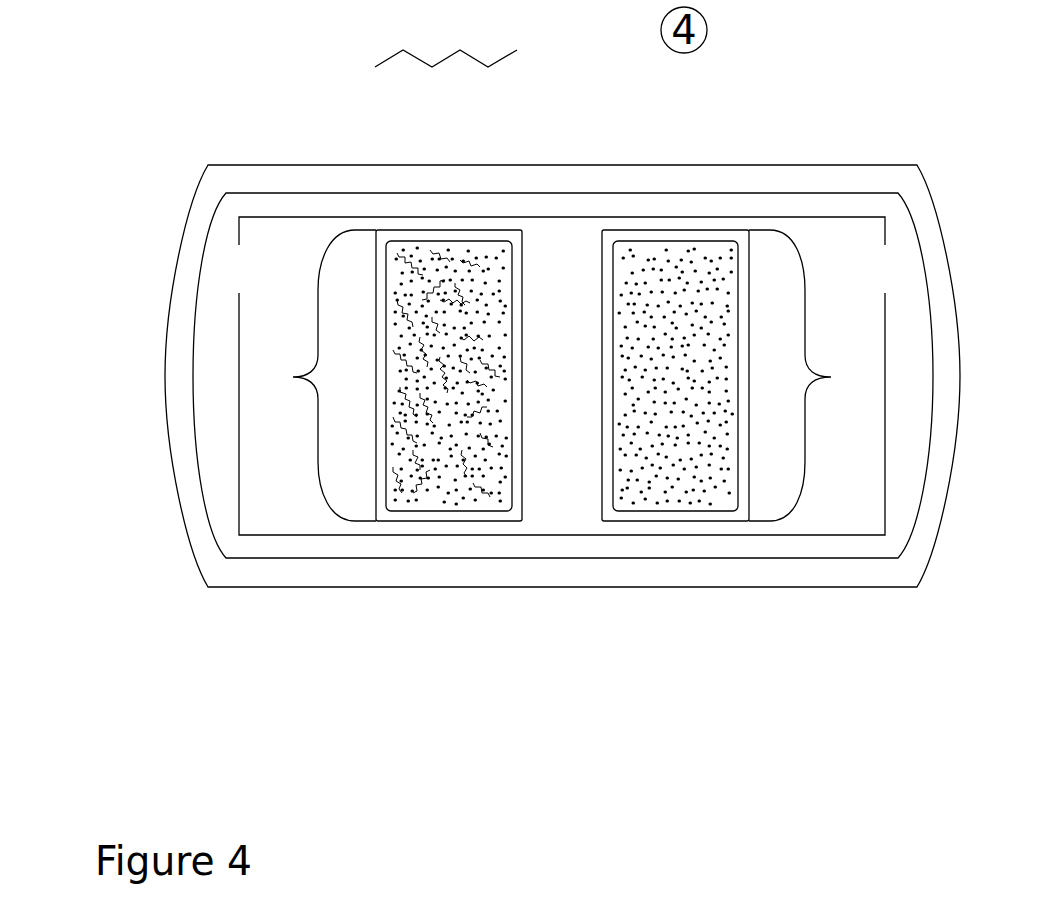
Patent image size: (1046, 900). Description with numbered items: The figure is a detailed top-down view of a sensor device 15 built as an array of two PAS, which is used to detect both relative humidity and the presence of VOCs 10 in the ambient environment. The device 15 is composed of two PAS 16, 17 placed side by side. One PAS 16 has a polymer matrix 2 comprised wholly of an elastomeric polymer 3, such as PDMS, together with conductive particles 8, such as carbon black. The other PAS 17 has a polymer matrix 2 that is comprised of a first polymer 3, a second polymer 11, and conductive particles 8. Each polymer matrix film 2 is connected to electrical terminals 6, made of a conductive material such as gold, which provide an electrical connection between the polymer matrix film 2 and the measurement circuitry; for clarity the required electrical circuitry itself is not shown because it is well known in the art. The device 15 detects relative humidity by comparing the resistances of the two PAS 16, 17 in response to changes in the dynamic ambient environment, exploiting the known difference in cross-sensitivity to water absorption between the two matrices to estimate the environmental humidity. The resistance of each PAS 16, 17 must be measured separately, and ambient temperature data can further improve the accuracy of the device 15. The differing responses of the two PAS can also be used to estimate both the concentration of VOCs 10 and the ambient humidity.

The polymer matrix film 2 is at (562, 378).
The first polymer 3 is at (615, 410).
The electrical terminals 6 is at (448, 243).
The conducting particles 8 is at (621, 355).
The VOCs 10 is at (385, 51).
The second polymer 11 is at (504, 304).
The sensor device 15 is at (197, 148).
The PAS 16 is at (808, 291).
The PAS 17 is at (315, 291).